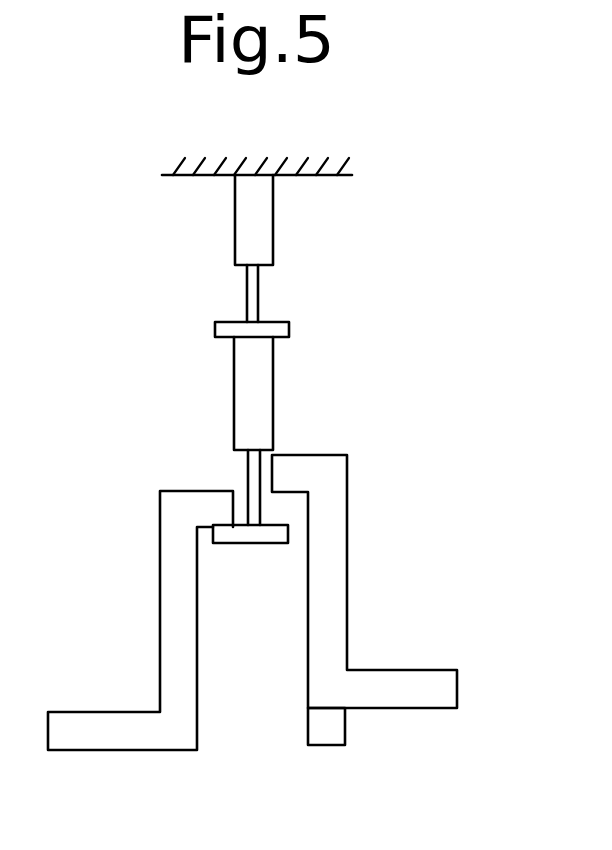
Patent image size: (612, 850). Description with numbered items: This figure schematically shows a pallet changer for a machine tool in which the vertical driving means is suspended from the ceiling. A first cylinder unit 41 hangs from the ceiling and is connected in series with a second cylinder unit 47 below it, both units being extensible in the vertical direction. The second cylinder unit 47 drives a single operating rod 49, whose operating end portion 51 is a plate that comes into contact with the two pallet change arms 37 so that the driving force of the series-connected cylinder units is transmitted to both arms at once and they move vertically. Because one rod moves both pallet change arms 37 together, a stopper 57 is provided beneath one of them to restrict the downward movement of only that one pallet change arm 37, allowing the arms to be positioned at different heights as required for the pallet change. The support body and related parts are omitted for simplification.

The pallet change arm 37 is at (167, 567).
The first cylinder unit 41 is at (273, 220).
The second cylinder unit 47 is at (273, 372).
The operating rod 49 is at (243, 468).
The operating end portion 51 is at (288, 527).
The stopper 57 is at (337, 730).